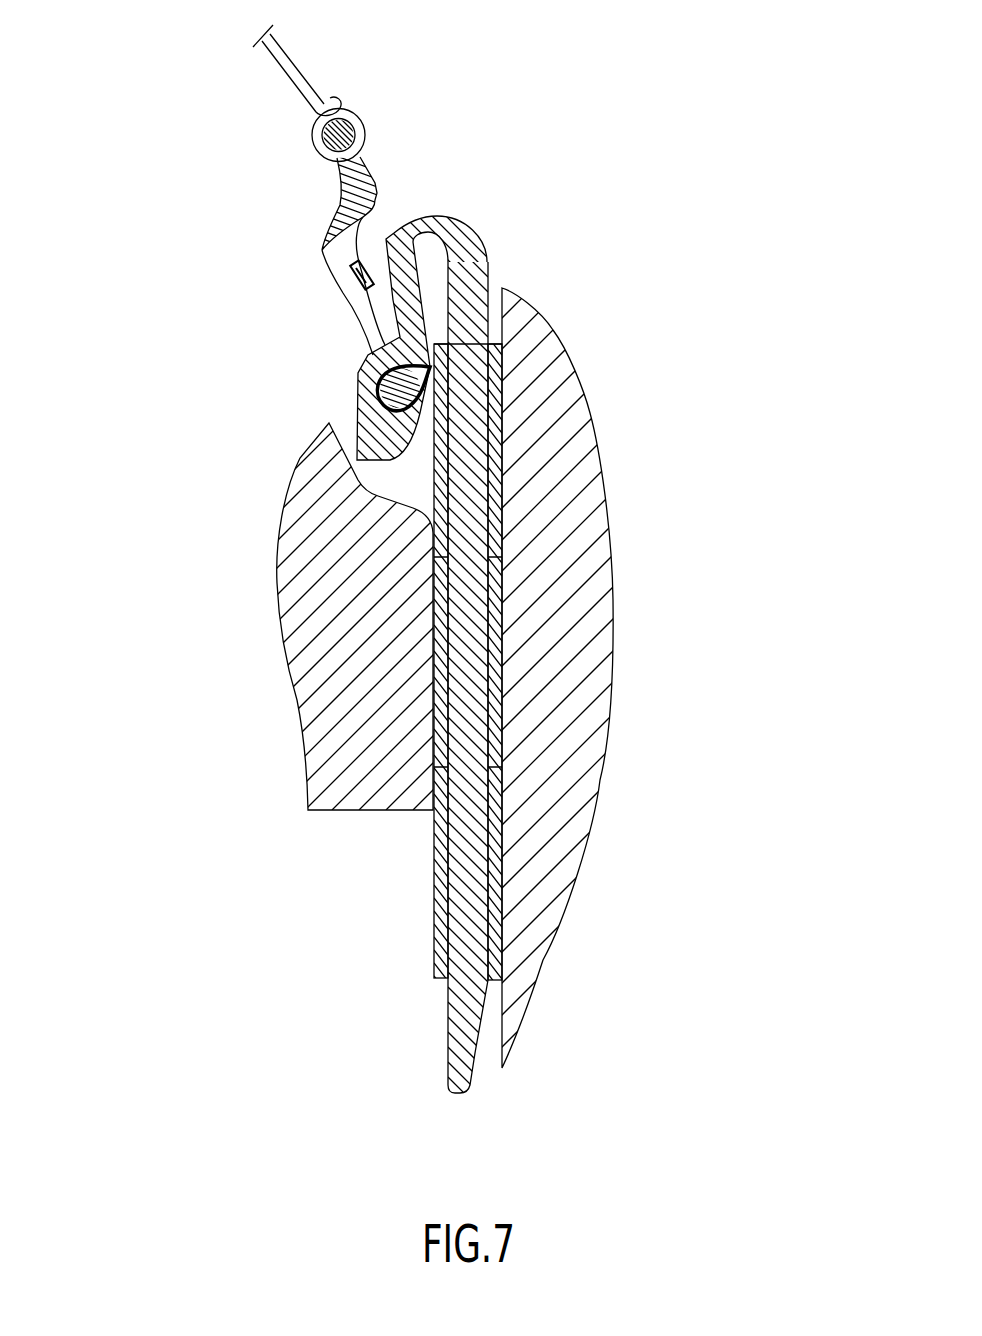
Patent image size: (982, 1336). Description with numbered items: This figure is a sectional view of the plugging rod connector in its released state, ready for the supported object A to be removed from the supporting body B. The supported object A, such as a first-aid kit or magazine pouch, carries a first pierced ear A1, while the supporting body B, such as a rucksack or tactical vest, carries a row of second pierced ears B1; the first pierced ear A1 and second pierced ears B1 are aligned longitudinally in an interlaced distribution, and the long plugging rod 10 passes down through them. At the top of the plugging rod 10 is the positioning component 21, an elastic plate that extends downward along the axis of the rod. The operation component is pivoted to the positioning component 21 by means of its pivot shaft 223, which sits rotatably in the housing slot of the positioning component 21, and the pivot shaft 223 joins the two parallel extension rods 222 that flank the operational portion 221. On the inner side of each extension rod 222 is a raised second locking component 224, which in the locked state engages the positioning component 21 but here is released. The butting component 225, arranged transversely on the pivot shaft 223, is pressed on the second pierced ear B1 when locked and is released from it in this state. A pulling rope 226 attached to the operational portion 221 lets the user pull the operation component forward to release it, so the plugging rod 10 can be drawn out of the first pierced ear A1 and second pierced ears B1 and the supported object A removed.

The plugging rod 10 is at (460, 613).
The positioning component 21 is at (410, 333).
The operational portion 221 is at (372, 167).
The extension rods 222 is at (362, 303).
The pivot shaft 223 is at (398, 387).
The second locking component 224 is at (350, 268).
The butting component 225 is at (443, 345).
The pulling rope 226 is at (292, 63).
The supported object A is at (357, 757).
The first pierced ear A1 is at (440, 633).
The supporting body B is at (560, 720).
The second pierced ears B1 is at (490, 443).